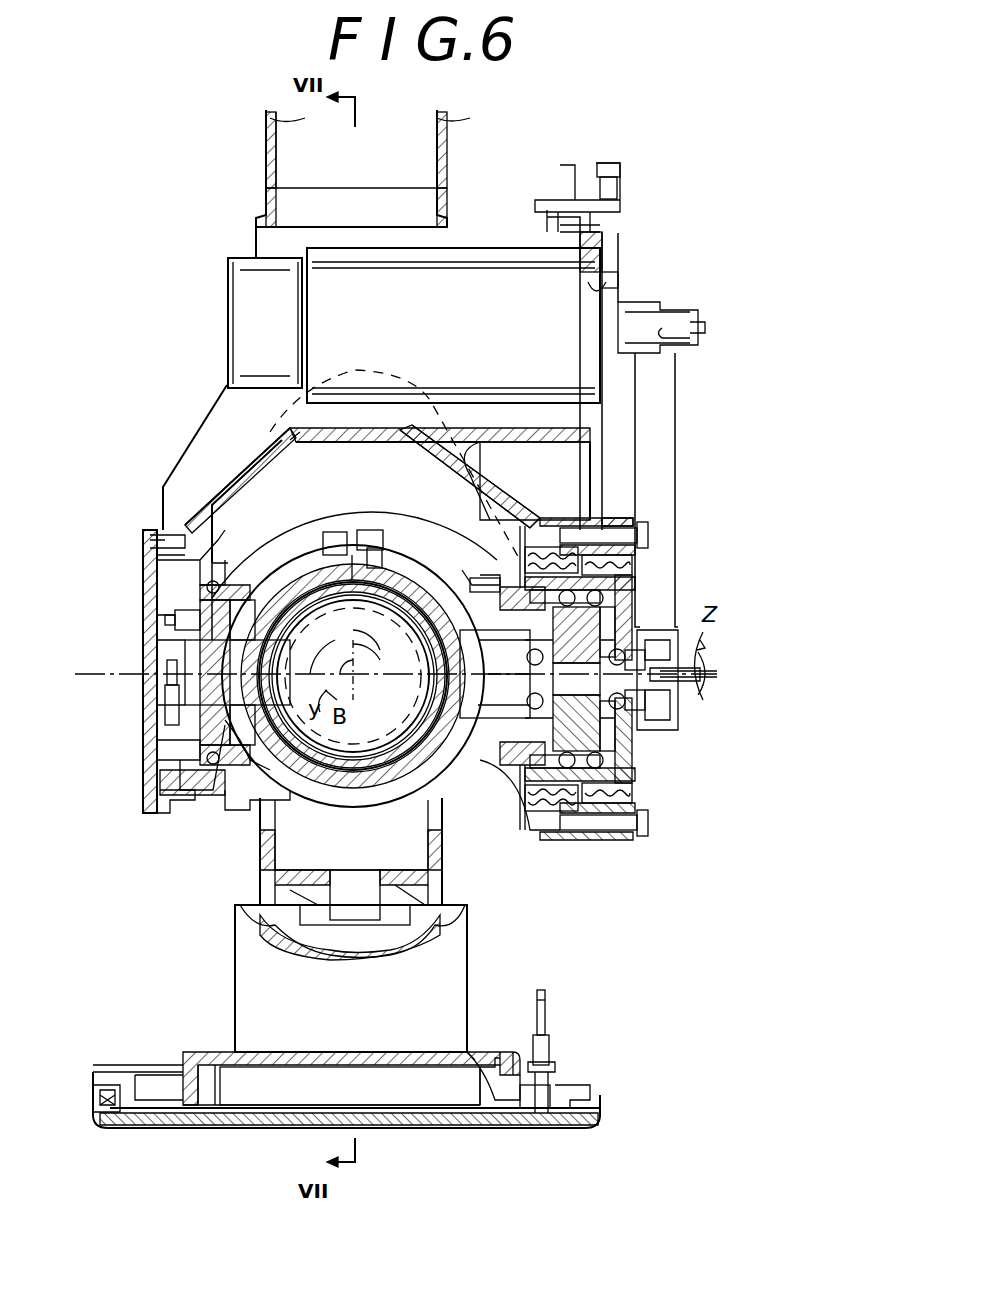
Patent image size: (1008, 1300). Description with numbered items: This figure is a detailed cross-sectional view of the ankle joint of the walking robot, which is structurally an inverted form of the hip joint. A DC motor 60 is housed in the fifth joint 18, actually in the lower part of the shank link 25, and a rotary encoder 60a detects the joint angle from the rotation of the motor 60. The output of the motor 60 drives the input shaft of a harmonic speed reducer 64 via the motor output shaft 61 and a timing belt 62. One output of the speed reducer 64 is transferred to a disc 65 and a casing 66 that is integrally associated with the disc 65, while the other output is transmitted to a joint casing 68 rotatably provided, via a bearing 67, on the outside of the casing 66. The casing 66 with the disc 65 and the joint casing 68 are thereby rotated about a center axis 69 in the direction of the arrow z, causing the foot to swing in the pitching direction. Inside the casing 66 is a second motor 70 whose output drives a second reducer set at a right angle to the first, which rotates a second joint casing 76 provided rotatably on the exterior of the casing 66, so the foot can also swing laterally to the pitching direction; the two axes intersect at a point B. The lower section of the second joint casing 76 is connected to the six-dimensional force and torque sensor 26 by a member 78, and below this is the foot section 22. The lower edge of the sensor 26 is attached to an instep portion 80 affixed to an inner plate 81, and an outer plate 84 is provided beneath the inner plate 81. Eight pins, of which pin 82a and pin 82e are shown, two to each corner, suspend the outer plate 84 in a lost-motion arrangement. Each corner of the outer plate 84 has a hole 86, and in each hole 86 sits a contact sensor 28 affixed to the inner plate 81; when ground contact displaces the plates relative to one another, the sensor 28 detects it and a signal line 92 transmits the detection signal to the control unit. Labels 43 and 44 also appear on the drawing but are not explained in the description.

The fifth joint 18 is at (688, 585).
The foot section 22 is at (163, 1052).
The shank link 25 is at (447, 120).
The six-dimensional force and torque sensor 26 is at (465, 965).
The contact sensor 28 is at (552, 1048).
The wafer centering reference 43 is at (343, 605).
The wafer centering reference 44 is at (372, 590).
The DC motor 60 is at (453, 325).
The rotary encoder 60a is at (265, 323).
The motor output shaft 61 is at (620, 312).
The timing belt 62 is at (655, 447).
The harmonic speed reducer 64 is at (645, 745).
The disc 65 is at (522, 520).
The casing 66 is at (372, 570).
The bearing 67 is at (470, 570).
The joint casing 68 is at (302, 442).
The center axis 69 is at (712, 664).
The second motor 70 is at (353, 676).
The second joint casing 76 is at (442, 870).
The member 78 is at (442, 898).
The instep portion 80 is at (470, 1052).
The inner plate 81 is at (212, 1100).
The pin 82a is at (605, 1090).
The pin 82e is at (93, 1088).
The outer plate 84 is at (213, 1128).
The hole 86 is at (535, 1128).
The signal line 92 is at (548, 1000).